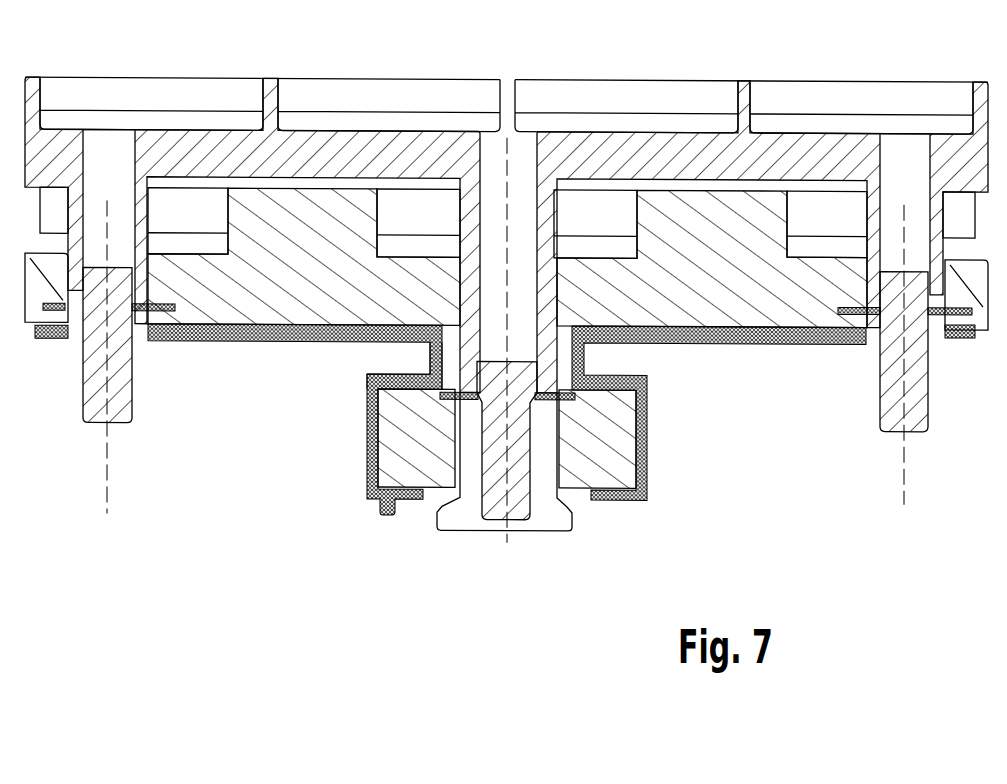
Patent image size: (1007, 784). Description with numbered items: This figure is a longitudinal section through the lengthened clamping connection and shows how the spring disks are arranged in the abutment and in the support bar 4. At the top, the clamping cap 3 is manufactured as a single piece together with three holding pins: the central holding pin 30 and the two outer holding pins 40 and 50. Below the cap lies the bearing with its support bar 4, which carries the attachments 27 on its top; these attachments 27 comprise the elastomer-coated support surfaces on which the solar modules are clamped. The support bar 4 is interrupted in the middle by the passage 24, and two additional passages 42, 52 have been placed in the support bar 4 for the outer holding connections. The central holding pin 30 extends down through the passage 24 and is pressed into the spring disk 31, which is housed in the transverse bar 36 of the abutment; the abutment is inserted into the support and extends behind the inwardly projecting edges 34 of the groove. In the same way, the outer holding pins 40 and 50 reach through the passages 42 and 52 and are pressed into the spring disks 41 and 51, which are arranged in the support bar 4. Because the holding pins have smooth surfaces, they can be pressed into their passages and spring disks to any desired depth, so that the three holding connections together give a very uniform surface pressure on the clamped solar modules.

The clamping cap 3 is at (610, 145).
The attachments 27 is at (323, 193).
The support bar 4 is at (727, 341).
The inwardly projecting edges 34 is at (397, 358).
The transverse bar 36 is at (365, 488).
The spring disk 31 is at (440, 395).
The holding pin 30 is at (490, 487).
The passage 24 is at (540, 509).
The holding pin 40 is at (122, 411).
The holding pin 50 is at (918, 388).
The passage 42 is at (143, 329).
The spring disk 41 is at (183, 339).
The spring disk 51 is at (838, 336).
The passage 52 is at (873, 332).